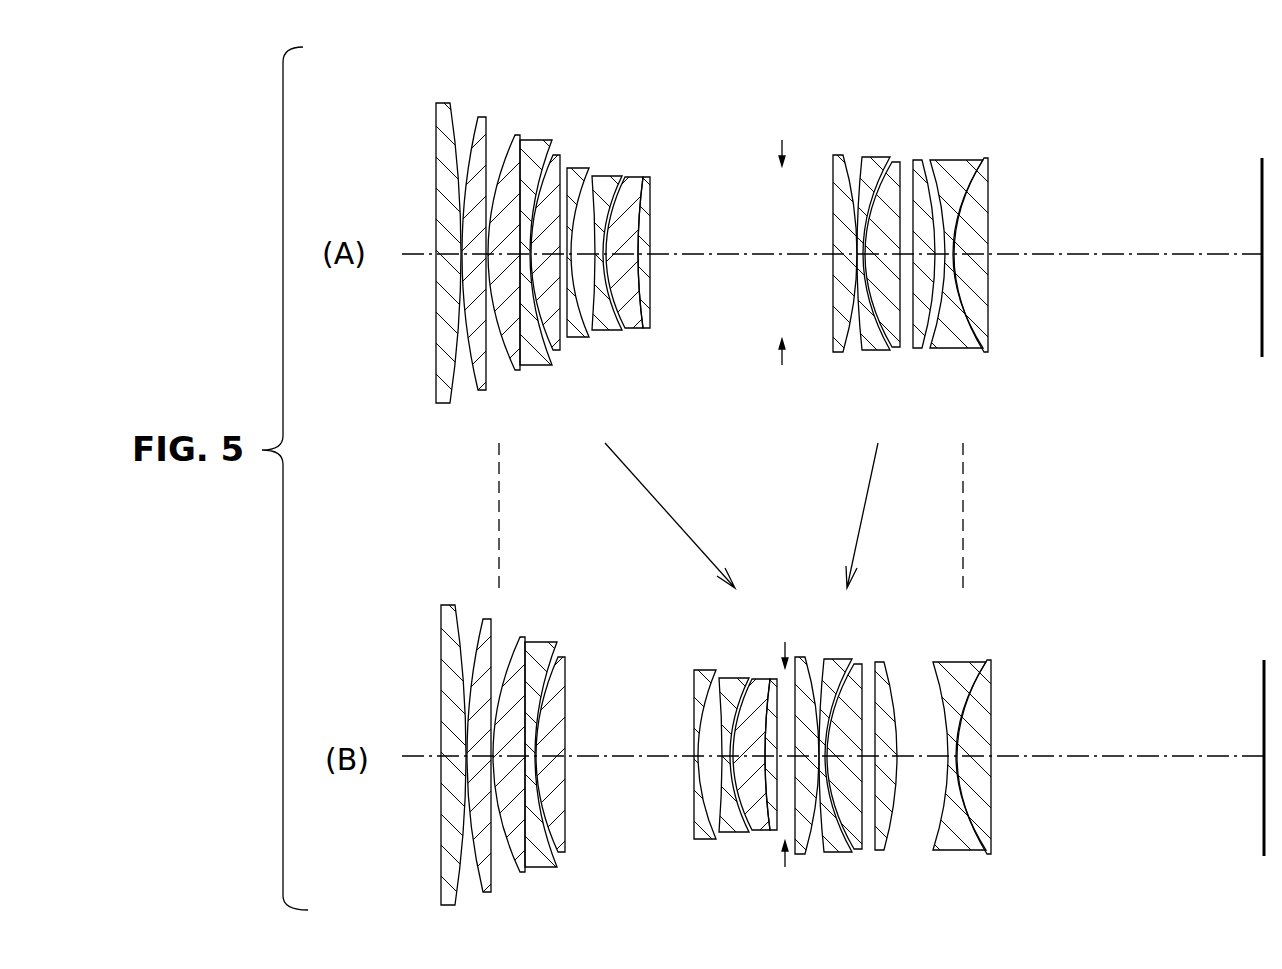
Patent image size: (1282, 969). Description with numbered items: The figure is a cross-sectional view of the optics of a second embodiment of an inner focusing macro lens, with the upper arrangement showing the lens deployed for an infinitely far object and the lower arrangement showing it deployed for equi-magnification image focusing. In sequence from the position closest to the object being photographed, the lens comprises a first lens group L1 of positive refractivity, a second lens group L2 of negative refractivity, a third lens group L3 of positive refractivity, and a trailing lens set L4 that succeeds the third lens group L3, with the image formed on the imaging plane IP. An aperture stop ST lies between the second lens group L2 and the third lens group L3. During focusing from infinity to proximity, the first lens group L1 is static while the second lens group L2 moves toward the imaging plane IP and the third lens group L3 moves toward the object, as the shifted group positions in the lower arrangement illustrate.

The first lens group L1 is at (563, 603).
The second lens group L2 is at (778, 603).
The third lens group L3 is at (792, 603).
The trailing lens set L4 is at (997, 603).
The aperture stop ST is at (778, 147).
The imaging plane IP is at (1260, 173).